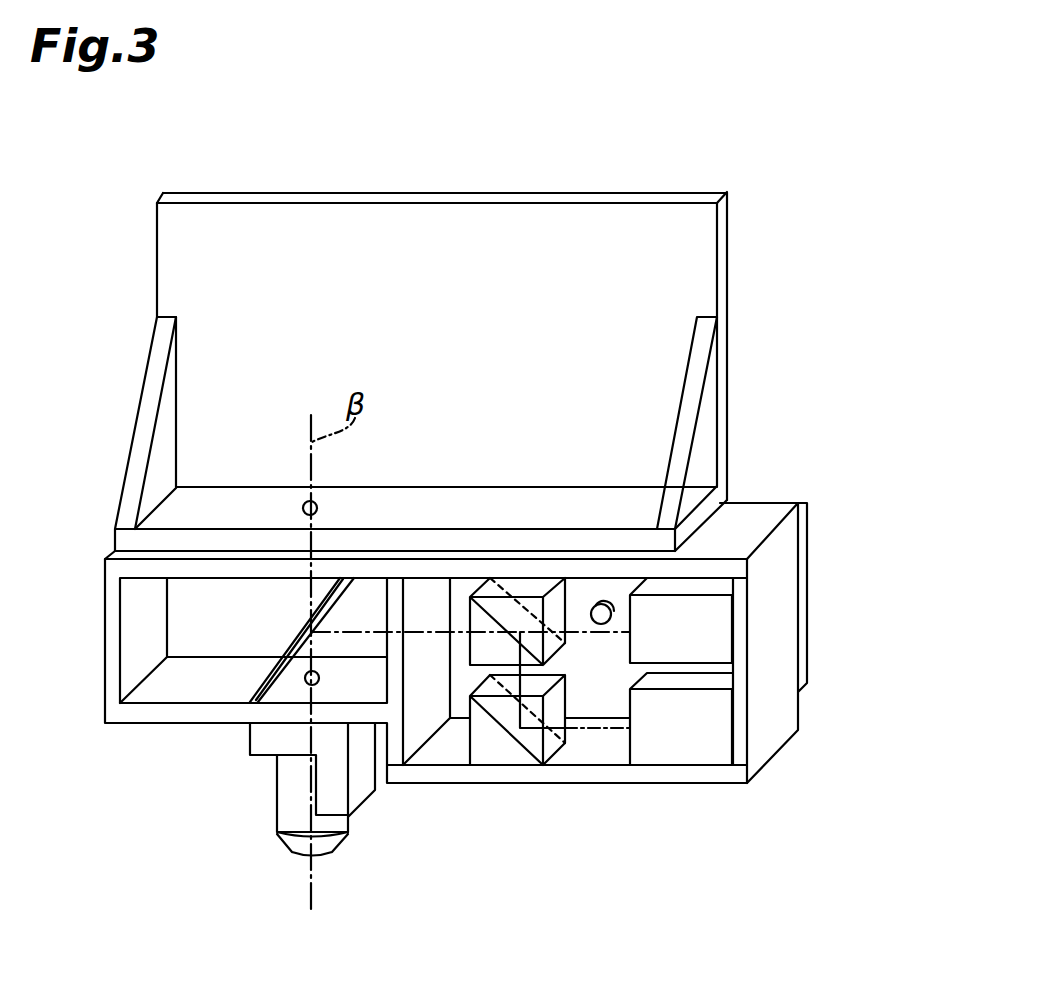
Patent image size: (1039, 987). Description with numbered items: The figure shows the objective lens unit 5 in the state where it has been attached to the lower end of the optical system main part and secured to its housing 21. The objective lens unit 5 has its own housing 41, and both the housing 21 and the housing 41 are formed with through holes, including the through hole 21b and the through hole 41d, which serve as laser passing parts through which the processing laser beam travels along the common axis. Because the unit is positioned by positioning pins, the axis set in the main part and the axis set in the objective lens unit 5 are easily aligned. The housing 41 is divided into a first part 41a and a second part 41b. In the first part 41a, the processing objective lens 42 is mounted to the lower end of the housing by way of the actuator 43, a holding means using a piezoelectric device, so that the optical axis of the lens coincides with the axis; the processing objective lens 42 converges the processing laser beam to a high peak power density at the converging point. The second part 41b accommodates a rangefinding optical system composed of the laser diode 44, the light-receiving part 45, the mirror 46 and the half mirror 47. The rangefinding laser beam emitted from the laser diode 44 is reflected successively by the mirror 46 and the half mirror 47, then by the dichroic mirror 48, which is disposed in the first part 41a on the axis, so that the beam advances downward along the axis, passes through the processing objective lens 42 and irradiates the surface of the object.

The objective lens unit 5 is at (836, 648).
The housing 21 is at (450, 192).
The through hole 21b is at (320, 505).
The housing 41 is at (775, 752).
The first part 41a is at (182, 683).
The second part 41b is at (598, 744).
The through hole 41d is at (306, 686).
The processing objective lens 42 is at (292, 852).
The actuator 43 is at (363, 790).
The laser diode 44 is at (675, 743).
The light-receiving part 45 is at (707, 626).
The mirror 46 is at (507, 752).
The half mirror 47 is at (482, 653).
The dichroic mirror 48 is at (253, 699).